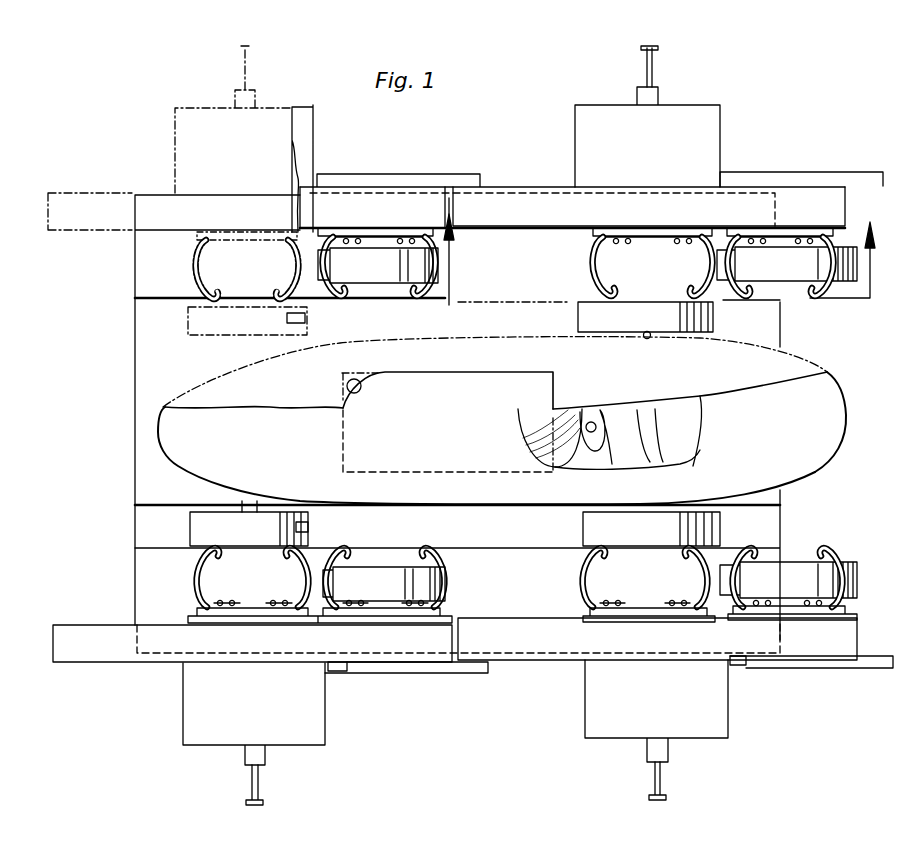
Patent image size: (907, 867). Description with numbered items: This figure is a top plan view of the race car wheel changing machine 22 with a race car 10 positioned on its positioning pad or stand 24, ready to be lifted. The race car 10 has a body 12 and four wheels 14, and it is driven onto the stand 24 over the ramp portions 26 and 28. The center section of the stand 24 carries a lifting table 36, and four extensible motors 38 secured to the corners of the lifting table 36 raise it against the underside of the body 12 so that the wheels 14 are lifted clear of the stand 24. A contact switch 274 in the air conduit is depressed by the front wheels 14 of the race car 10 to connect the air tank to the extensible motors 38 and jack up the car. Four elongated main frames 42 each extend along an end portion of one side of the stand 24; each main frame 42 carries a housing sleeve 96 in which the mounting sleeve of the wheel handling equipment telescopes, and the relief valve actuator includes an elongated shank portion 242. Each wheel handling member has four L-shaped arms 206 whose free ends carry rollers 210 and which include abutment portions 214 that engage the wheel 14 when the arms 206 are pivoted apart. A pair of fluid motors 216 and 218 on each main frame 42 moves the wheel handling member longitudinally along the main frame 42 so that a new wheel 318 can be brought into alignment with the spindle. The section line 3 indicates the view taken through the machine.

The section line 3- 3 is at (659, 266).
The race car 10 is at (841, 385).
The body 12 is at (832, 461).
The wheels 14 is at (272, 342).
The race car wheel changing machine 22 is at (784, 528).
The positioning pad or stand 24 is at (136, 457).
The ramp portion 26 is at (752, 323).
The ramp portion 28 is at (153, 322).
The lifting table 36 is at (483, 390).
The extensible motors 38 is at (351, 372).
The main frame 42 is at (555, 658).
The housing sleeve 96 is at (656, 97).
The L-shaped arms 206 is at (440, 592).
The roller 210 is at (438, 552).
The abutment portion 214 is at (384, 606).
The fluid motor 216 is at (428, 672).
The fluid motor 218 is at (337, 670).
The elongated shank portion 242 is at (654, 55).
The contact switch 274 is at (305, 318).
The new wheel 318 is at (850, 580).